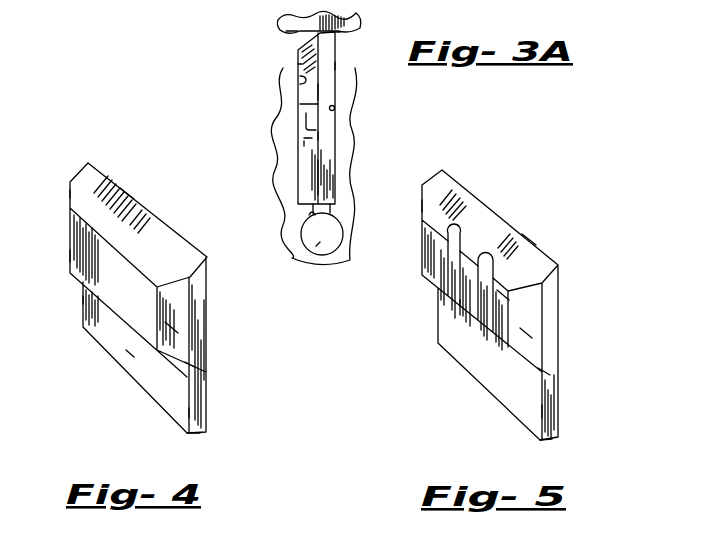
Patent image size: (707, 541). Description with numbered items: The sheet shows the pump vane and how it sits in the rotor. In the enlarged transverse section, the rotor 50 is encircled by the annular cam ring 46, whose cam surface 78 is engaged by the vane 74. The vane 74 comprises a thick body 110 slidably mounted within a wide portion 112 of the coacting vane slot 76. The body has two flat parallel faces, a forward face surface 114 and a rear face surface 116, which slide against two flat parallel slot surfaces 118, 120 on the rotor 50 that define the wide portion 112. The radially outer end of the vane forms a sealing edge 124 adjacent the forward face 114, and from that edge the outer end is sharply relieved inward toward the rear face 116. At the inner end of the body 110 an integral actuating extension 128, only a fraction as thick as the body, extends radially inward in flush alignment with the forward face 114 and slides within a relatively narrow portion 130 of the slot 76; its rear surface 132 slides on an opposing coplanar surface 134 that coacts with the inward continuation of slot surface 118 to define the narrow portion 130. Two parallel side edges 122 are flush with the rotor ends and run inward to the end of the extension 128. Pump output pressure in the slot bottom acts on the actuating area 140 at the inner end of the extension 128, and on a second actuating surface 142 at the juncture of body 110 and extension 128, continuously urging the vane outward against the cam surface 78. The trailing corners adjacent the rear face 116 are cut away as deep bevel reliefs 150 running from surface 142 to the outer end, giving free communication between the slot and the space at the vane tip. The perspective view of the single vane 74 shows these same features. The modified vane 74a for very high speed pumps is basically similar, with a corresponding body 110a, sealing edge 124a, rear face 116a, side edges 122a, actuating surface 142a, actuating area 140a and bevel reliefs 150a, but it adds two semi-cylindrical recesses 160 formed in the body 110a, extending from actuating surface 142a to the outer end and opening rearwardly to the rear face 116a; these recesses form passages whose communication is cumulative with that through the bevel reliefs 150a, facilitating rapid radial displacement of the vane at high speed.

In FIG. 3A, the cam ring 46 is at (298, 22).
In FIG. 3A, the cam surface 78 is at (292, 32).
In FIG. 3A, the vane 74 is at (296, 52).
In FIG. 4, the vane 74 is at (86, 353).
In FIG. 3A, the rear face surface 116 is at (298, 67).
In FIG. 3A, the slot surface 120 is at (300, 77).
In FIG. 3A, the vane body 110 is at (318, 97).
In FIG. 4, the vane body 110 is at (80, 257).
In FIG. 3A, the bevel relief 150 is at (309, 104).
In FIG. 4, the bevel relief 150 is at (70, 194).
In FIG. 3A, the second actuating surface 142 is at (306, 128).
In FIG. 4, the second actuating surface 142 is at (192, 365).
In FIG. 3A, the rear surface of actuating extension 132 is at (309, 138).
In FIG. 3A, the wide portion of vane slot 112 is at (306, 143).
In FIG. 3A, the actuating area 140 is at (330, 208).
In FIG. 4, the actuating area 140 is at (193, 437).
In FIG. 3A, the coplanar surface 134 is at (311, 221).
In FIG. 3A, the vane slot 76 is at (318, 246).
In FIG. 3A, the rotor 50 is at (322, 263).
In FIG. 3A, the narrow portion of vane slot 130 is at (323, 208).
In FIG. 3A, the sealing edge 124 is at (336, 31).
In FIG. 4, the sealing edge 124 is at (128, 190).
In FIG. 3A, the forward face surface 114 is at (337, 66).
In FIG. 3A, the side edge 122 is at (323, 87).
In FIG. 4, the side edge 122 is at (83, 300).
In FIG. 3A, the slot surface 118 is at (335, 109).
In FIG. 3A, the actuating extension 128 is at (322, 136).
In FIG. 4, the actuating extension 128 is at (130, 355).
In FIG. 5, the modified vane 74a is at (546, 303).
In FIG. 5, the bevel relief of modified vane 150a is at (422, 206).
In FIG. 5, the semi-cylindrical recesses 160 is at (485, 258).
In FIG. 5, the sealing edge of modified vane 124a is at (529, 238).
In FIG. 5, the rear face surface of modified vane 116a is at (503, 292).
In FIG. 5, the second actuating surface of modified vane 142a is at (546, 372).
In FIG. 5, the side edge of modified vane 122a is at (551, 412).
In FIG. 5, the actuating area of modified vane 140a is at (545, 440).
In FIG. 5, the body of modified vane 110a is at (461, 308).